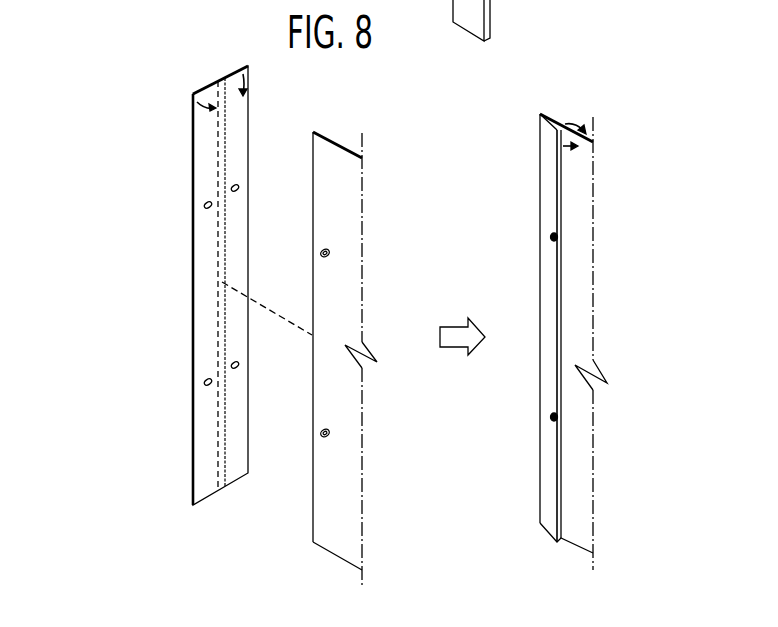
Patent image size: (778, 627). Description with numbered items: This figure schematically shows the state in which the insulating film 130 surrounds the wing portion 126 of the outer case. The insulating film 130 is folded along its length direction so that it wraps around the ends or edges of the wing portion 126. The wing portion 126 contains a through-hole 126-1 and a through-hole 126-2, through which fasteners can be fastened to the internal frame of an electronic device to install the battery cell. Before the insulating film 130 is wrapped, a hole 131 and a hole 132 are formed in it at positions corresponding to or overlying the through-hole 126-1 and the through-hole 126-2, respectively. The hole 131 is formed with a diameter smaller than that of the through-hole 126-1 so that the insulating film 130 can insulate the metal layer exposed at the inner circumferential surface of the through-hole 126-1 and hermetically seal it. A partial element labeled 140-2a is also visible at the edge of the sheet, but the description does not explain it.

The insulating film 130 is at (182, 123).
The hole 131 is at (210, 208).
The hole 132 is at (210, 385).
The wing portion 126 is at (338, 128).
The through-hole 126-1 is at (326, 257).
The through-hole 126-2 is at (326, 437).
The panel portion 140-2a is at (580, 0).